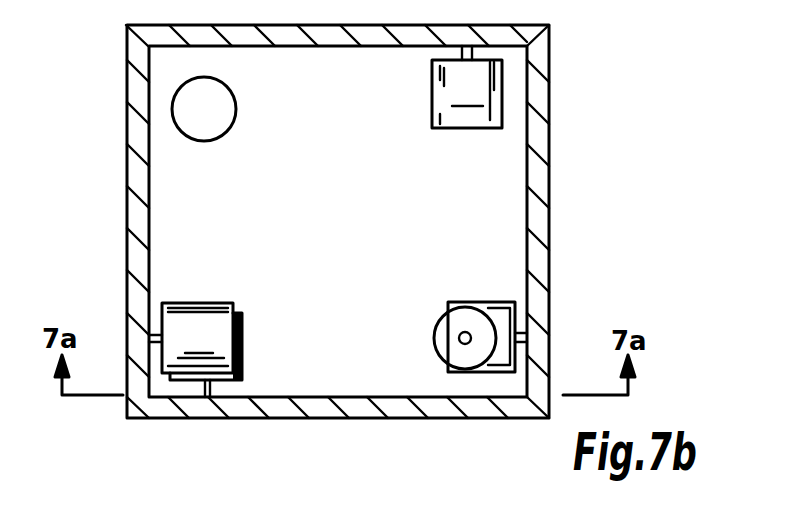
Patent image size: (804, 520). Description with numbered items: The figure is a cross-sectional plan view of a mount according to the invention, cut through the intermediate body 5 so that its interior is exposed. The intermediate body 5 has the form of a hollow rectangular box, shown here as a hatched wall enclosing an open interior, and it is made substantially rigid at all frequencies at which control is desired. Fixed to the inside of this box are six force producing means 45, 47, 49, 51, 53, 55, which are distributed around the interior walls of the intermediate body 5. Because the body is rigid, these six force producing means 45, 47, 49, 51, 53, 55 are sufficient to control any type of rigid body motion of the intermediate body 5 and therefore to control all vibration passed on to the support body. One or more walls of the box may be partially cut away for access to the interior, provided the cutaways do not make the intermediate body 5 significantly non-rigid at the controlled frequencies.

The intermediate body 5 is at (540, 200).
The force producing means 45 is at (195, 350).
The force producing means 47 is at (450, 330).
The force producing means 49 is at (502, 315).
The force producing means 51 is at (216, 111).
The force producing means 53 is at (247, 377).
The force producing means 55 is at (467, 87).